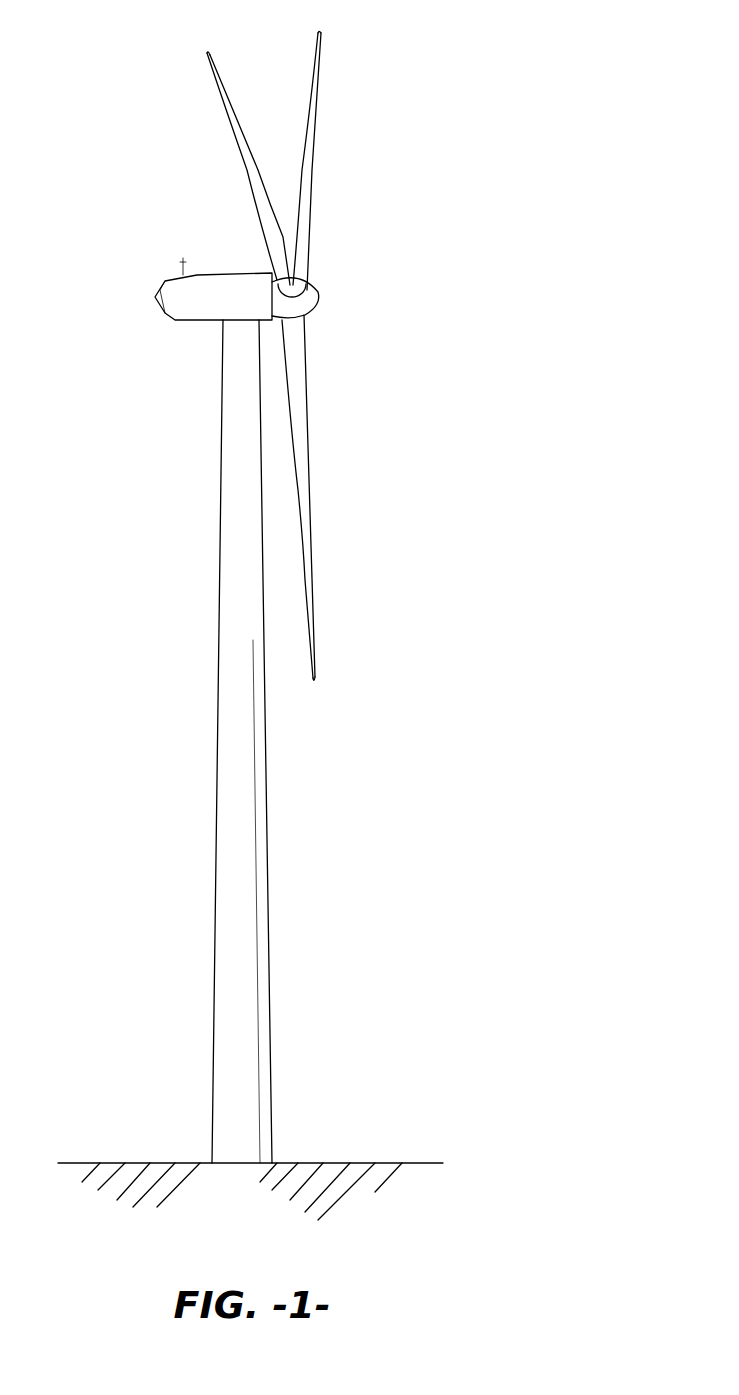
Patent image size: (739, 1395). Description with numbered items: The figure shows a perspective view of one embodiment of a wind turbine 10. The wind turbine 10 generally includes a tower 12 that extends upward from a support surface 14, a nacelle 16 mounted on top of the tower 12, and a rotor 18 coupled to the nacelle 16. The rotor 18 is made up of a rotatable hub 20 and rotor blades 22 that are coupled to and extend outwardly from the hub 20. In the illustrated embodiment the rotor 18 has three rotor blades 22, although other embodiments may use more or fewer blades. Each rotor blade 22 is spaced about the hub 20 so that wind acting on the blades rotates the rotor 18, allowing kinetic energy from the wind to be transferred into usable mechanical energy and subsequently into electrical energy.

The wind turbine 10 is at (432, 137).
The tower 12 is at (228, 858).
The support surface 14 is at (341, 1163).
The nacelle 16 is at (198, 327).
The rotor 18 is at (343, 311).
The rotatable hub 20 is at (318, 297).
The rotor blade 22 is at (232, 133).